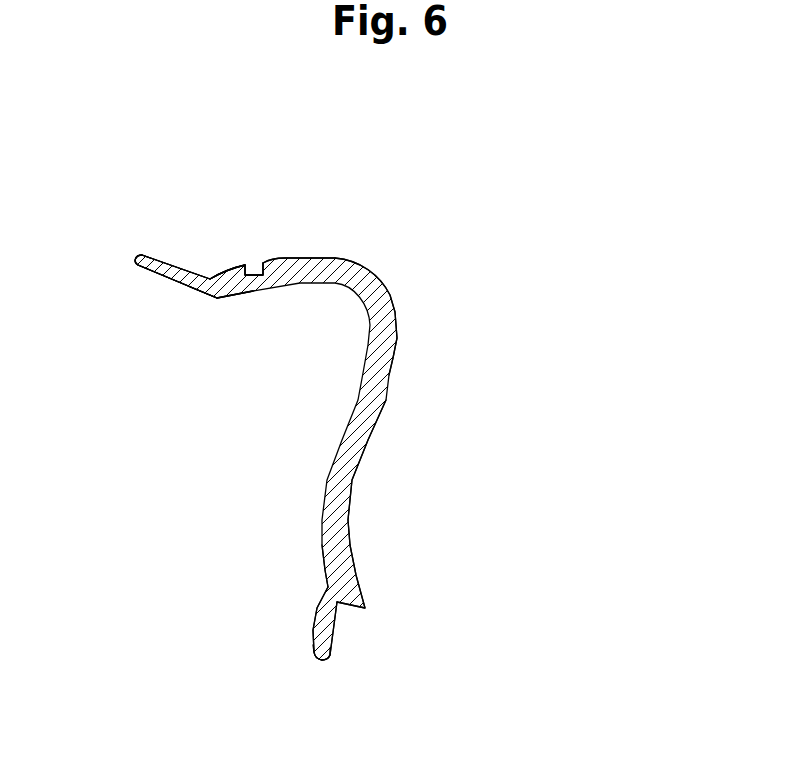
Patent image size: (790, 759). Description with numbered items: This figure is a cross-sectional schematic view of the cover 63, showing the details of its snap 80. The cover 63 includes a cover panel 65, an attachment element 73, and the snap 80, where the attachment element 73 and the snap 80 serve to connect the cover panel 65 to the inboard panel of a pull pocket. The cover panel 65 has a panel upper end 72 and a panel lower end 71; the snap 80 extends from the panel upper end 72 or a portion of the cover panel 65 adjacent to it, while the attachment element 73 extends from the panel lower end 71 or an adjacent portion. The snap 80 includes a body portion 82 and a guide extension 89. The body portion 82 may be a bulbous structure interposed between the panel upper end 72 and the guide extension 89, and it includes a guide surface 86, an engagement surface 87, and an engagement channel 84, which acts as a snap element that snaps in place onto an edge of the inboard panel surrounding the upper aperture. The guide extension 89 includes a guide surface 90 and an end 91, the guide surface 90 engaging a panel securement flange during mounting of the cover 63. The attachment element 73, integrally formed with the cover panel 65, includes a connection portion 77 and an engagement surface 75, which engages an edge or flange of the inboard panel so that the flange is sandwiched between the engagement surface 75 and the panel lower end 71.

The cover 63 is at (385, 252).
The cover panel 65 is at (400, 343).
The panel lower end 71 is at (347, 608).
The panel upper end 72 is at (268, 262).
The attachment element 73 is at (297, 630).
The engagement surface 75 is at (333, 647).
The connection portion 77 is at (322, 590).
The snap 80 is at (172, 34).
The body portion 82 is at (217, 265).
The engagement channel 84 is at (255, 267).
The guide surface 86 is at (233, 265).
The engagement surface 87 is at (214, 301).
The guide extension 89 is at (165, 252).
The guide surface 90 is at (183, 292).
The end 91 is at (138, 260).